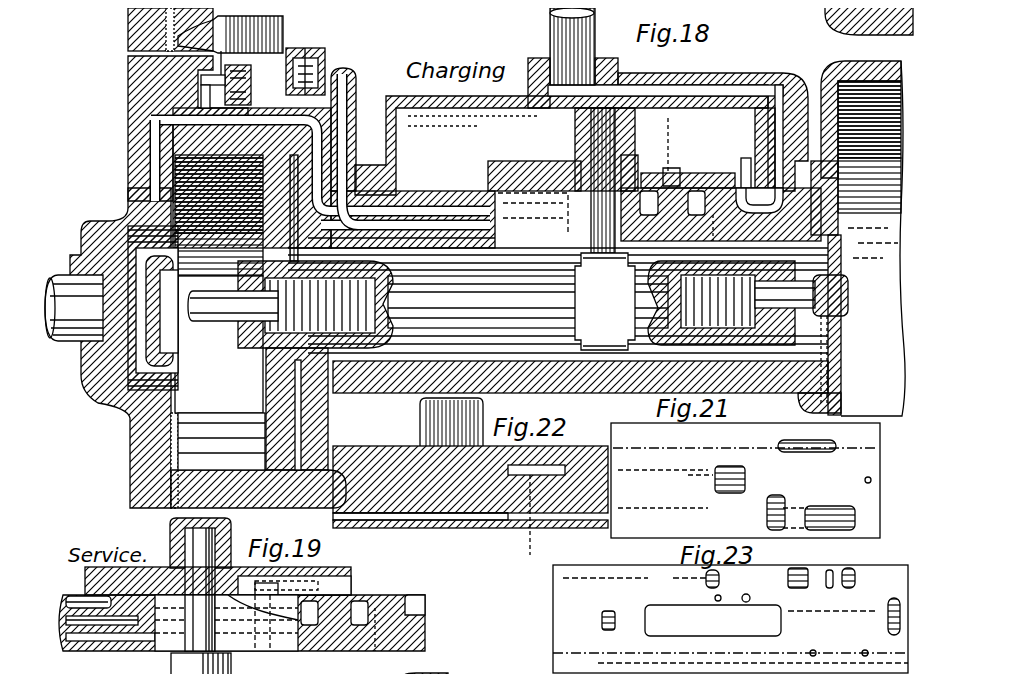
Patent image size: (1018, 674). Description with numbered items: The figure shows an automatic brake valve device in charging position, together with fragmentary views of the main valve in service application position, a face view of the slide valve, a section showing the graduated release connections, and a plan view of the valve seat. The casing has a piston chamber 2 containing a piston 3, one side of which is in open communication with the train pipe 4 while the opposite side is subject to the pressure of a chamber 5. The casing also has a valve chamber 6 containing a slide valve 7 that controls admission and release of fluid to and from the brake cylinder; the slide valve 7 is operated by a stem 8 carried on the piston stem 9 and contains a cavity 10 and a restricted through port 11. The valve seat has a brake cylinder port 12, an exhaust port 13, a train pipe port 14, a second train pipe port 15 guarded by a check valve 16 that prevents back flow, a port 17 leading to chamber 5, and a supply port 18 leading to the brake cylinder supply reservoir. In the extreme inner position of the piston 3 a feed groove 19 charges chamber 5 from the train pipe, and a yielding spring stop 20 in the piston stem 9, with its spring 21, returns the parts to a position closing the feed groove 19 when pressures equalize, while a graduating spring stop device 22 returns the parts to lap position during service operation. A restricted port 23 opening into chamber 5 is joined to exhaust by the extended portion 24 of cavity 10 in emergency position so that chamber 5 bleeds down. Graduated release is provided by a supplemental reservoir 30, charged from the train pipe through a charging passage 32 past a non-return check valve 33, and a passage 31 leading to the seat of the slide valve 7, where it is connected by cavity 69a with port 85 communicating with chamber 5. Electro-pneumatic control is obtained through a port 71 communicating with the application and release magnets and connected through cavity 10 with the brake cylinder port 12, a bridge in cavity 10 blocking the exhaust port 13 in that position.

In FIG. 18, the piston chamber 2 is at (165, 409).
In FIG. 18, the piston 3 is at (268, 394).
In FIG. 18, the train pipe 4 is at (62, 322).
In FIG. 18, the chamber 5 is at (812, 368).
In FIG. 18, the valve chamber 6 is at (490, 105).
In FIG. 18, the slide valve 7 is at (515, 170).
In FIG. 22, the slide valve 7 is at (365, 445).
In FIG. 21, the slide valve 7 is at (630, 515).
In FIG. 19, the slide valve 7 is at (80, 578).
In FIG. 18, the stem 8 is at (583, 200).
In FIG. 19, the stem 8 is at (185, 635).
In FIG. 18, the piston stem 9 is at (528, 300).
In FIG. 18, the cavity 10 is at (688, 168).
In FIG. 21, the cavity 10 is at (820, 508).
In FIG. 19, the cavity 10 is at (330, 574).
In FIG. 18, the through port 11 is at (736, 162).
In FIG. 21, the through port 11 is at (858, 469).
In FIG. 18, the brake cylinder port 12 is at (695, 210).
In FIG. 23, the brake cylinder port 12 is at (840, 580).
In FIG. 19, the brake cylinder port 12 is at (350, 586).
In FIG. 18, the exhaust port 13 is at (642, 200).
In FIG. 23, the exhaust port 13 is at (790, 580).
In FIG. 19, the exhaust port 13 is at (300, 612).
In FIG. 18, the train pipe port 14 is at (418, 215).
In FIG. 23, the train pipe port 14 is at (702, 578).
In FIG. 19, the train pipe port 14 is at (113, 617).
In FIG. 18, the port 15 is at (343, 87).
In FIG. 23, the port 15 is at (594, 610).
In FIG. 19, the port 15 is at (85, 600).
In FIG. 18, the check valve 16 is at (300, 75).
In FIG. 18, the port 17 is at (605, 301).
In FIG. 23, the port 17 is at (740, 588).
In FIG. 19, the port 17 is at (250, 640).
In FIG. 18, the supply port 18 is at (765, 200).
In FIG. 23, the supply port 18 is at (884, 590).
In FIG. 19, the supply port 18 is at (413, 600).
In FIG. 18, the feed groove 19 is at (313, 128).
In FIG. 18, the spring stop 20 is at (840, 308).
In FIG. 18, the spring 21 is at (634, 374).
In FIG. 18, the graduating spring stop device 22 is at (208, 292).
In FIG. 23, the restricted port 23 is at (706, 590).
In FIG. 21, the extended portion of cavity 24 is at (767, 488).
In FIG. 18, the supplemental reservoir 30 is at (275, 13).
In FIG. 18, the passage 31 is at (422, 242).
In FIG. 22, the passage 31 is at (472, 510).
In FIG. 23, the passage 31 is at (806, 642).
In FIG. 19, the passage 31 is at (98, 625).
In FIG. 18, the charging passage 32 is at (195, 92).
In FIG. 18, the check valve 33 is at (200, 72).
In FIG. 18, the cavity 69a is at (690, 140).
In FIG. 22, the cavity 69a is at (451, 431).
In FIG. 21, the cavity 69a is at (823, 439).
In FIG. 18, the port 71 is at (663, 172).
In FIG. 22, the port 71 is at (529, 519).
In FIG. 23, the port 71 is at (821, 582).
In FIG. 18, the port 85 is at (739, 228).
In FIG. 23, the port 85 is at (857, 642).
In FIG. 19, the port 85 is at (367, 643).